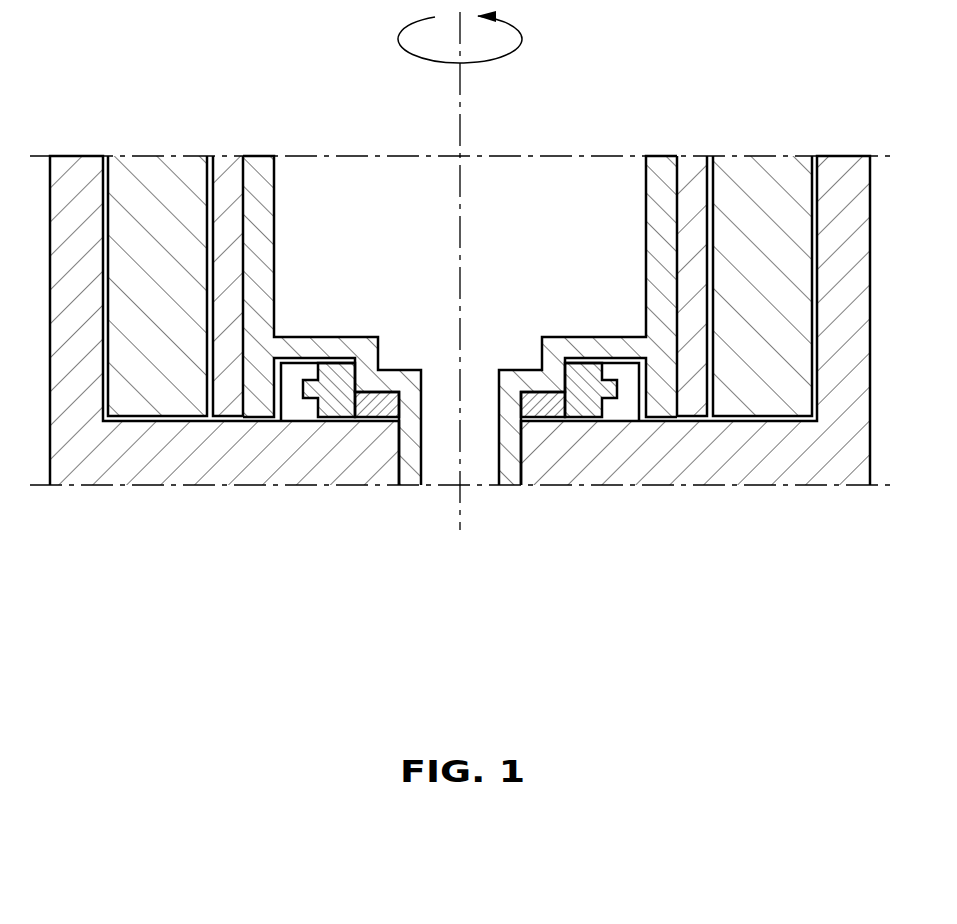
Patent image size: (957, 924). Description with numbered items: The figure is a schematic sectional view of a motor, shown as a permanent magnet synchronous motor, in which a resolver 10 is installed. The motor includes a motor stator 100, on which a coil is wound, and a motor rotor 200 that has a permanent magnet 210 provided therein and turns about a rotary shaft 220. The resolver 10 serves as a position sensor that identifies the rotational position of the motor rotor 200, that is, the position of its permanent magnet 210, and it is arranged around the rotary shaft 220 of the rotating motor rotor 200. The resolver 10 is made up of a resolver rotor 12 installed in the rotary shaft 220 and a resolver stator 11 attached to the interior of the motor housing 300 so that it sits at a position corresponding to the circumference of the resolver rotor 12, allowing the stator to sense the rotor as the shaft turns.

The resolver 10 is at (458, 351).
The resolver stator 11 is at (333, 405).
The resolver rotor 12 is at (377, 405).
The motor stator 100 is at (157, 173).
The motor rotor 200 is at (460, 346).
The permanent magnet 210 is at (228, 173).
The rotary shaft 220 is at (652, 580).
The housing 300 is at (135, 470).